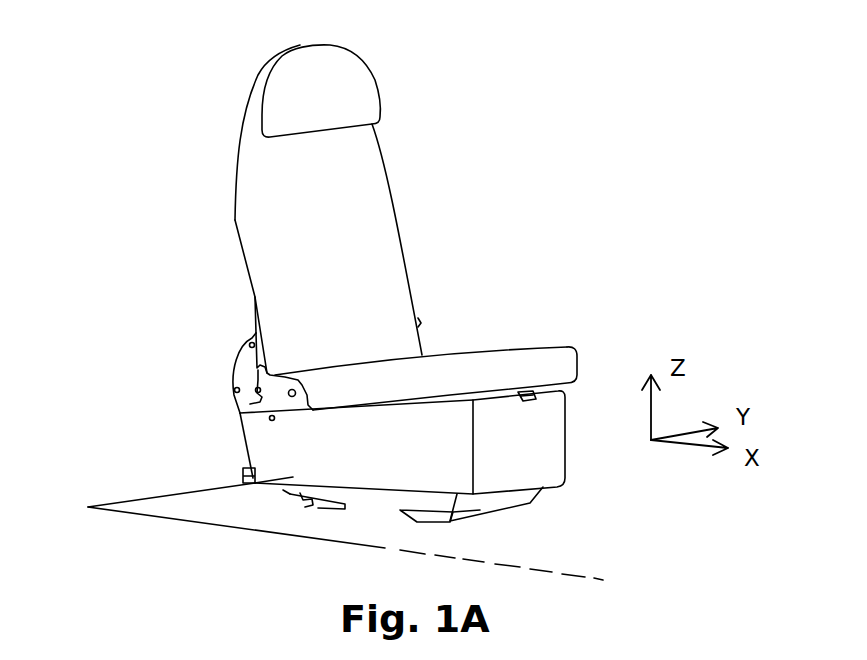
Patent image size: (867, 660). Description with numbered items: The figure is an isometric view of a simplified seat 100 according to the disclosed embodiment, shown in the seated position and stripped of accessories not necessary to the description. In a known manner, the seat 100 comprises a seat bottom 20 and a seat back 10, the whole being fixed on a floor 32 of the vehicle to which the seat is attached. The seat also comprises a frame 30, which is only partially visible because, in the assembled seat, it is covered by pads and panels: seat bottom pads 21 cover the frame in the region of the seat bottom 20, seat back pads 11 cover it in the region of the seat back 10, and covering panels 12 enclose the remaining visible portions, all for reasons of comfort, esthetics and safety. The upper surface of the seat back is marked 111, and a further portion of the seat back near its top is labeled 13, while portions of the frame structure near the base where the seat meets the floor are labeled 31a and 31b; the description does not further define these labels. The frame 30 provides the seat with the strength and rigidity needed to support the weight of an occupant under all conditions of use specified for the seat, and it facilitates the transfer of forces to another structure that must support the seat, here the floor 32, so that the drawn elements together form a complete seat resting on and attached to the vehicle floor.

The seat 100 is at (513, 128).
The seat back 10 is at (410, 290).
The seat back pads 11 is at (365, 197).
The seat back surface 111 is at (293, 247).
The covering panels 12 is at (353, 72).
The seat back frame cover 13 is at (280, 82).
The seat bottom 20 is at (497, 348).
The seat bottom pads 21 is at (553, 362).
The frame 30 is at (311, 507).
The recliner bracket 31a is at (250, 367).
The lower bracket 31b is at (283, 497).
The floor 32 is at (192, 507).